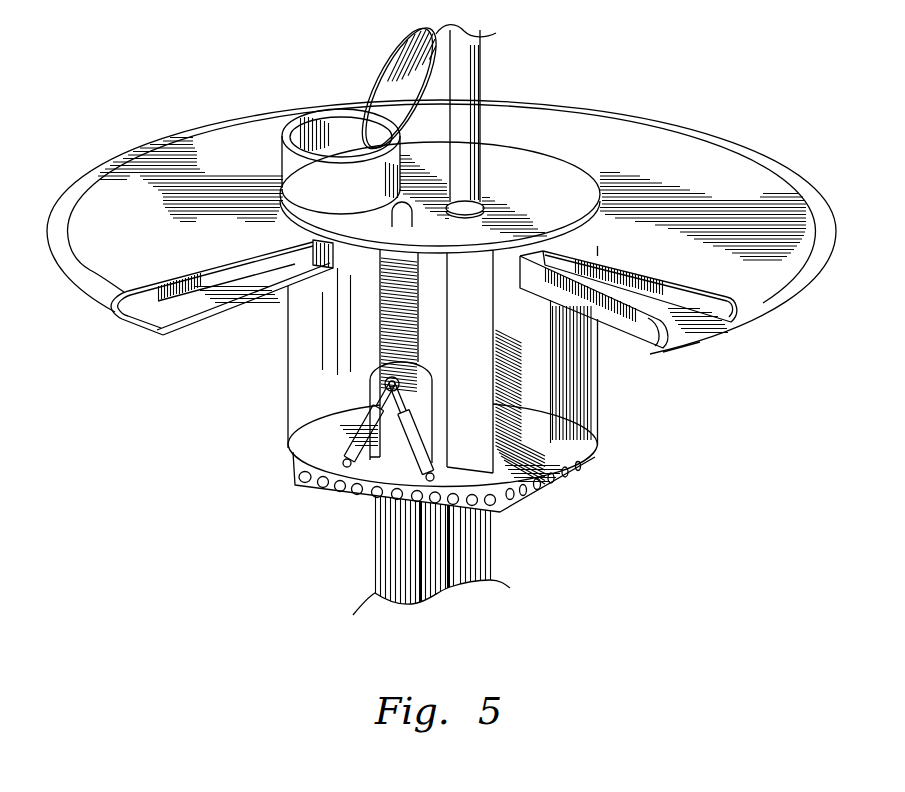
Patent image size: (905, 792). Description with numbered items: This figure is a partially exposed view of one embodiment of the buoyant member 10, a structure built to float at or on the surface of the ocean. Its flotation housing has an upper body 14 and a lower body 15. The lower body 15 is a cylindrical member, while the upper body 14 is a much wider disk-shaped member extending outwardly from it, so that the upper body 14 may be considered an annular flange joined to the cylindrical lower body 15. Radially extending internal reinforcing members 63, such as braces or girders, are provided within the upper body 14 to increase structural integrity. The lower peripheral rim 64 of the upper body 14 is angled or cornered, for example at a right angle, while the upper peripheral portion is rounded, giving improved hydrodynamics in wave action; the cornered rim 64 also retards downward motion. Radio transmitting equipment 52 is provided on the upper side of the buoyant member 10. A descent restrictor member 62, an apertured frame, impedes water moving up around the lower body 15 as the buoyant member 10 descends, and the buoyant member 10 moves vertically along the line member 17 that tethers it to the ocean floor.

The buoyant member 10 is at (698, 82).
The upper body 14 is at (207, 123).
The lower body 15 is at (595, 417).
The line member 17 is at (477, 542).
The radio transmitting equipment 52 is at (483, 70).
The descent restrictor member 62 is at (503, 512).
The internal reinforcing members 63 is at (137, 313).
The lower peripheral rim 64 is at (170, 325).